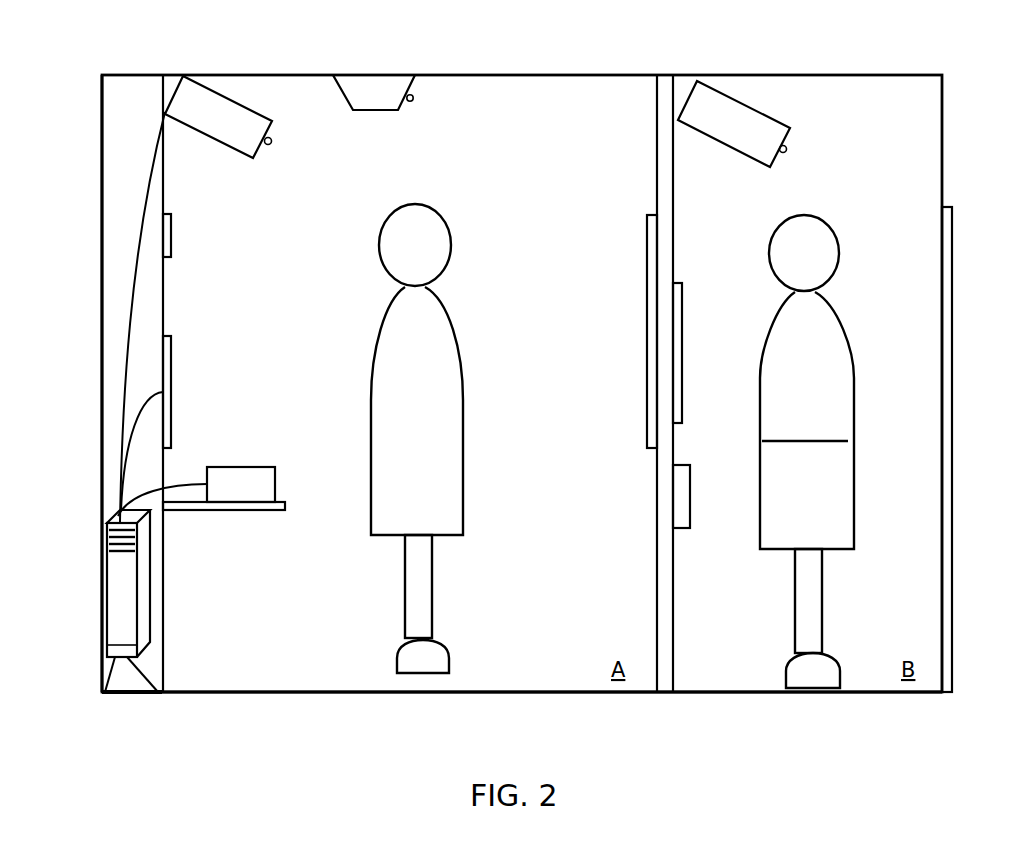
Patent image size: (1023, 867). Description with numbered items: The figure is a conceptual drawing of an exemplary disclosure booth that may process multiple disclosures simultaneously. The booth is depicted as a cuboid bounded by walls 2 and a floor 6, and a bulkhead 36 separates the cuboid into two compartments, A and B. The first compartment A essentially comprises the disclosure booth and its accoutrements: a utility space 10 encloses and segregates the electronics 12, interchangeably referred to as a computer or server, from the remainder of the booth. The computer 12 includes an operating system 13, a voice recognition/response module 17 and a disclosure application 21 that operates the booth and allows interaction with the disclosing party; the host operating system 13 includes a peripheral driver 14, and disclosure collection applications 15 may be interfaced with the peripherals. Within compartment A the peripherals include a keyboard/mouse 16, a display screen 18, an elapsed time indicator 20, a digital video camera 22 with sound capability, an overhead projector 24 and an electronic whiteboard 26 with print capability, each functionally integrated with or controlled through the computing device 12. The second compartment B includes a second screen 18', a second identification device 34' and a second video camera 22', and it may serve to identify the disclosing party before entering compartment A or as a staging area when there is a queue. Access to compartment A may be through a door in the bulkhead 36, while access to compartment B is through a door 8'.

The walls 2 is at (102, 341).
The floor 6 is at (366, 692).
The door 8' is at (966, 449).
The utility space 10 is at (133, 75).
The electronics 12 is at (110, 600).
The operating system 13 is at (107, 564).
The peripheral driver 14 is at (230, 510).
The disclosure collection applications 15 is at (107, 645).
The keyboard/mouse 16 is at (268, 467).
The voice recognition/response application or module 17 is at (106, 692).
The display screen 18 is at (191, 392).
The second screen 18' is at (706, 353).
The elapsed time indicator 20 is at (171, 245).
The disclosure application 21 is at (150, 692).
The digital video camera 22 is at (218, 117).
The second video camera 22' is at (734, 124).
The overhead projector 24 is at (375, 75).
The electronic whiteboard 26 is at (647, 344).
The second identification device 34' is at (705, 496).
The bulkhead 36 is at (665, 75).